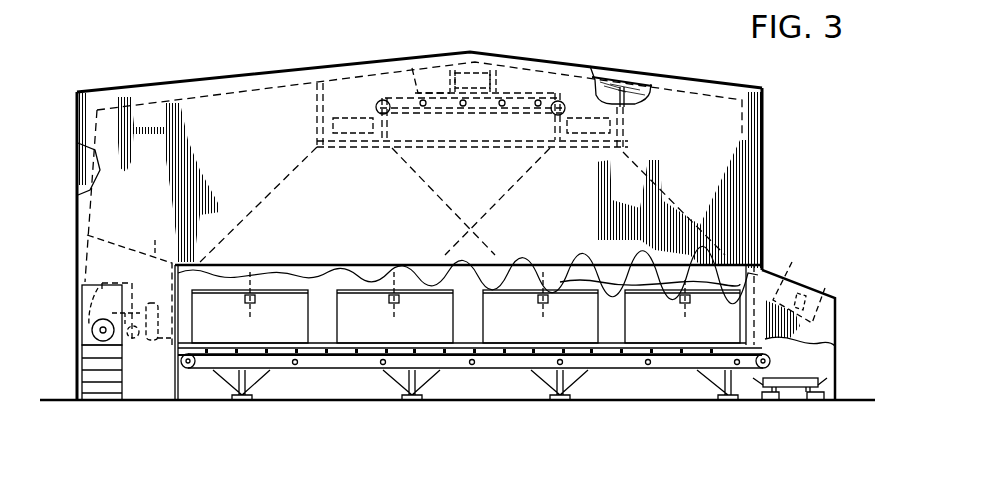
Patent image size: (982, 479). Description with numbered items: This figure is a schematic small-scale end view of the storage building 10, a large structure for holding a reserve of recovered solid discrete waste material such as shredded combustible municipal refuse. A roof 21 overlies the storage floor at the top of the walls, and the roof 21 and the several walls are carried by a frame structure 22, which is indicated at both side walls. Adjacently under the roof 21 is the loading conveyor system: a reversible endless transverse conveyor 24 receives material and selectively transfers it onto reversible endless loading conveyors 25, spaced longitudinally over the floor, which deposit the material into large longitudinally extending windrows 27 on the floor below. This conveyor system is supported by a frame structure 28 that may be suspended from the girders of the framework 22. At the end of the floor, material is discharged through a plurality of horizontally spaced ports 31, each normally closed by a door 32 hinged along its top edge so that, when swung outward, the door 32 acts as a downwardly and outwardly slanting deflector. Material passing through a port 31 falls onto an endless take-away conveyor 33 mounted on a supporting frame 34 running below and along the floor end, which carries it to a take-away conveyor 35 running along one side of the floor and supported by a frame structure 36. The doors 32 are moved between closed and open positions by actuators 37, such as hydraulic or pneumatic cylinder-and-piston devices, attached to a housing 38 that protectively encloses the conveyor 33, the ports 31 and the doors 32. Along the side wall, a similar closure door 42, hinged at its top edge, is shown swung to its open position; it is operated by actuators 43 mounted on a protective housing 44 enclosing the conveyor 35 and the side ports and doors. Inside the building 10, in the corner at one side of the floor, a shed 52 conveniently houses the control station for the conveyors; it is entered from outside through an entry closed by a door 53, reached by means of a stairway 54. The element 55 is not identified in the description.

The storage building 10 is at (118, 88).
The roof 21 is at (568, 42).
The frame structure 22 is at (90, 175).
The reversible endless transverse conveyor 24 is at (408, 68).
The reversible endless loading conveyors 25 is at (317, 110).
The windrows 27 is at (478, 212).
The frame structure 28 is at (598, 68).
The ports 31 is at (308, 322).
The doors 32 is at (235, 337).
The take-away conveyor 33 is at (606, 350).
The supporting frame 34 is at (583, 380).
The take-away conveyor 35 is at (802, 378).
The frame structure 36 is at (763, 396).
The actuators 37 is at (250, 292).
The housing 38 is at (488, 268).
The closure door 42 is at (795, 262).
The actuators 43 is at (812, 312).
The protective housing 44 is at (830, 292).
The shed 52 is at (155, 240).
The door 53 is at (98, 290).
The stairway 54 is at (90, 370).
The door 55 is at (104, 283).